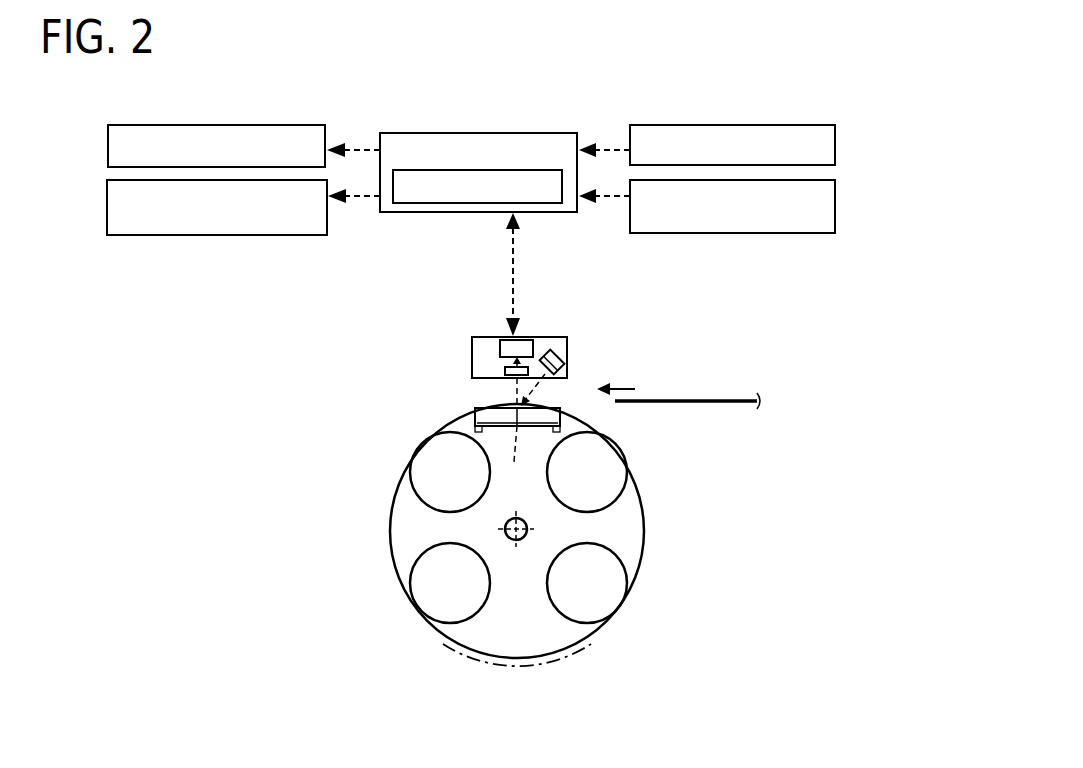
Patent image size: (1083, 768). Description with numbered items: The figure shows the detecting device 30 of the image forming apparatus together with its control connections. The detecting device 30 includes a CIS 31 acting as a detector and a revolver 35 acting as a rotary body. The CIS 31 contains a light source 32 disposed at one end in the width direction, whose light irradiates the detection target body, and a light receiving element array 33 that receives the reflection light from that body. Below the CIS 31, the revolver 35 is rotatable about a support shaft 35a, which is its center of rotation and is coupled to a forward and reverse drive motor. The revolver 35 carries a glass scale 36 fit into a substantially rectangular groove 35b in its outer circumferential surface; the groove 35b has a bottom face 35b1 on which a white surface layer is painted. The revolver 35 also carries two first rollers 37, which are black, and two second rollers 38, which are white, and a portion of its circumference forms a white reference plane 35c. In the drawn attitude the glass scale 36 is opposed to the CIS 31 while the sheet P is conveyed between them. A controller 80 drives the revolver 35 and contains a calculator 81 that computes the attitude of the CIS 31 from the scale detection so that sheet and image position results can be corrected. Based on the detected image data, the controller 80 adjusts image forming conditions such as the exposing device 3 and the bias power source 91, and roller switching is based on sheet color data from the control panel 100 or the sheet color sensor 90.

The exposing device 3 is at (110, 152).
The bias power source 91 is at (109, 198).
The controller 80 is at (478, 169).
The calculator 81 is at (480, 203).
The control panel 100 is at (836, 150).
The sheet color sensor 90 is at (836, 196).
The detecting device 30 is at (559, 329).
The CIS (contact image sensor) 31 is at (555, 335).
The light source 32 is at (568, 368).
The light receiving element array 33 is at (522, 340).
The sheet P is at (697, 400).
The revolver 35 is at (657, 515).
The support shaft 35a is at (521, 542).
The groove 35b is at (496, 410).
The bottom face 35b1 is at (520, 434).
The white reference plane 35c is at (580, 650).
The glass scale 36 is at (458, 394).
The first rollers 37 is at (611, 470).
The second rollers 38 is at (420, 486).